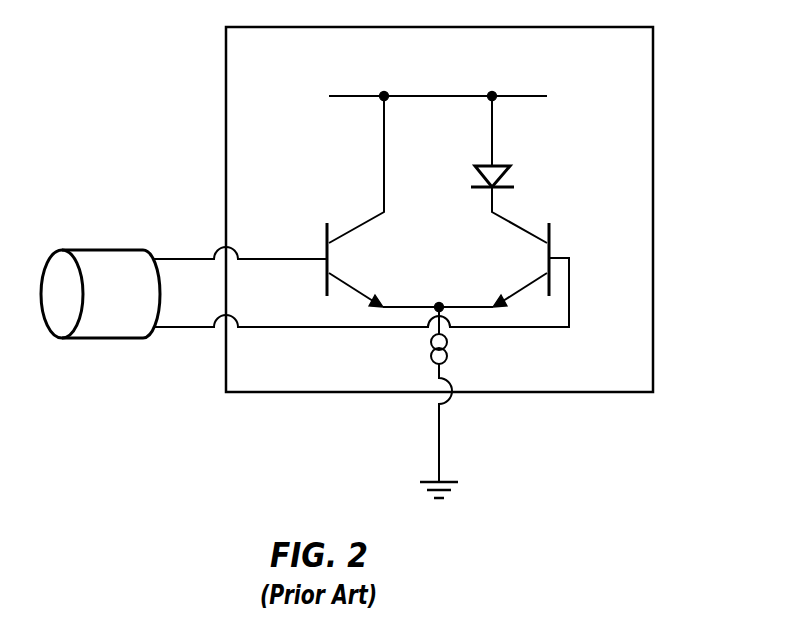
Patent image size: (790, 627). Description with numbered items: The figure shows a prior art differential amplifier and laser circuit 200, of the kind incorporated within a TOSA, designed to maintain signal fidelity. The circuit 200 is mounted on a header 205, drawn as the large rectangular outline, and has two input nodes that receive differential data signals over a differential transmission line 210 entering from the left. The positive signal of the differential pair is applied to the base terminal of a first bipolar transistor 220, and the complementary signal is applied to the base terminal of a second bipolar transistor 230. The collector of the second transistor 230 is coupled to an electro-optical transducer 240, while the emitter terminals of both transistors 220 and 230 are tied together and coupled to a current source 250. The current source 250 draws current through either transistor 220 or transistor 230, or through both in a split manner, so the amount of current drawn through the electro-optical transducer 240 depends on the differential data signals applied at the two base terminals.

The differential amplifier and laser circuit 200 is at (138, 78).
The header 205 is at (653, 207).
The differential transmission line 210 is at (100, 250).
The first bipolar transistor 220 is at (330, 251).
The second bipolar transistor 230 is at (546, 251).
The electro-optical transducer 240 is at (500, 162).
The current source 250 is at (447, 349).